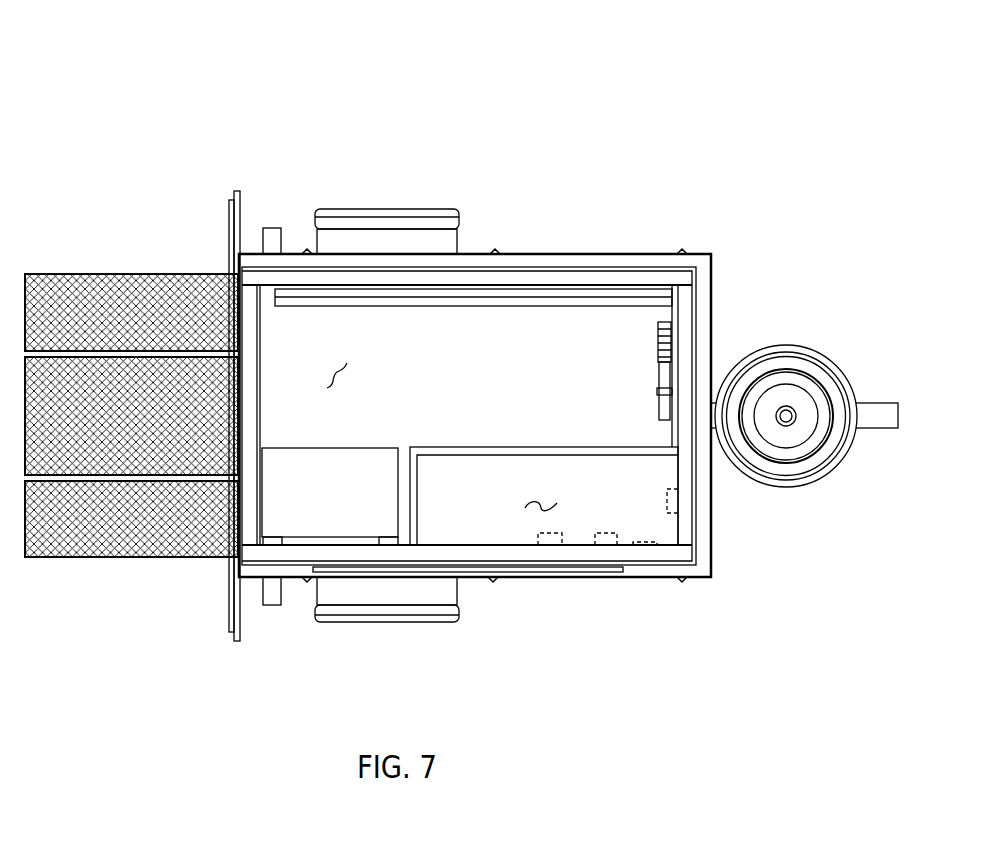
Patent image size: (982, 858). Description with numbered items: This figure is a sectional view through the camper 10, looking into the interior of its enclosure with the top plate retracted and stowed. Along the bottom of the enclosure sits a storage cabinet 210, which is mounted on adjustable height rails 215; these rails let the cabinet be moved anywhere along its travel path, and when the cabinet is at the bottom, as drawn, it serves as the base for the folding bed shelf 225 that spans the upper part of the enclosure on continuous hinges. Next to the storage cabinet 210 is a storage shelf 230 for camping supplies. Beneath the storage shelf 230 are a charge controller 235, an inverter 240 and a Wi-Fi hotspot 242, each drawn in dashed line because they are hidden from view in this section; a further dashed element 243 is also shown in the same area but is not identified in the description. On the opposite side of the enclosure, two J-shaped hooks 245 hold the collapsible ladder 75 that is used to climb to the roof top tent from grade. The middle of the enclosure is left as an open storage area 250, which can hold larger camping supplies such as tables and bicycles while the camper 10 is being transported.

The camper 10 is at (87, 159).
The collapsible ladder 75 is at (662, 371).
The storage cabinet 210 is at (310, 497).
The adjustable height rails 215 is at (272, 540).
The folding bed shelf 225 is at (598, 292).
The storage shelf 230 is at (538, 508).
The charge controller 235 is at (556, 543).
The inverter 240 is at (615, 540).
The Wi-Fi hotspot 242 is at (673, 500).
The third sensor 243 is at (647, 543).
The J-shaped hooks 245 is at (663, 365).
The open storage area 250 is at (332, 374).